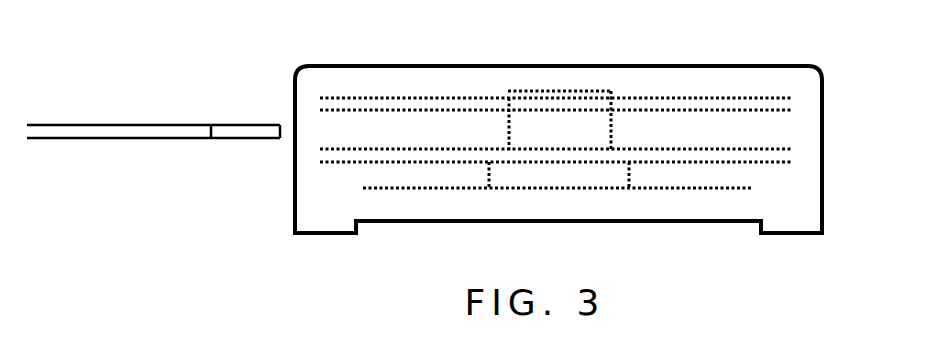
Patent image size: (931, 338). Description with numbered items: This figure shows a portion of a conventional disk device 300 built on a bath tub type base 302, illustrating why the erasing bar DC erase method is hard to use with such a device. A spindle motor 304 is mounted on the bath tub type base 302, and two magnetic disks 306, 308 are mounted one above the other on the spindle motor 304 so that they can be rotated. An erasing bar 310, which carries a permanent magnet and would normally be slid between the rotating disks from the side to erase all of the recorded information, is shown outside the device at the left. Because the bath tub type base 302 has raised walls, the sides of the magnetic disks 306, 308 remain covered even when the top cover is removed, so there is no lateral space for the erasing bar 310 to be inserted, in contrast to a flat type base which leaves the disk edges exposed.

The disk device 300 is at (185, 53).
The bath tub type base 302 is at (802, 207).
The spindle motor 304 is at (568, 90).
The magnetic disk 306 is at (792, 150).
The magnetic disk 308 is at (792, 101).
The erasing bar 310 is at (163, 140).